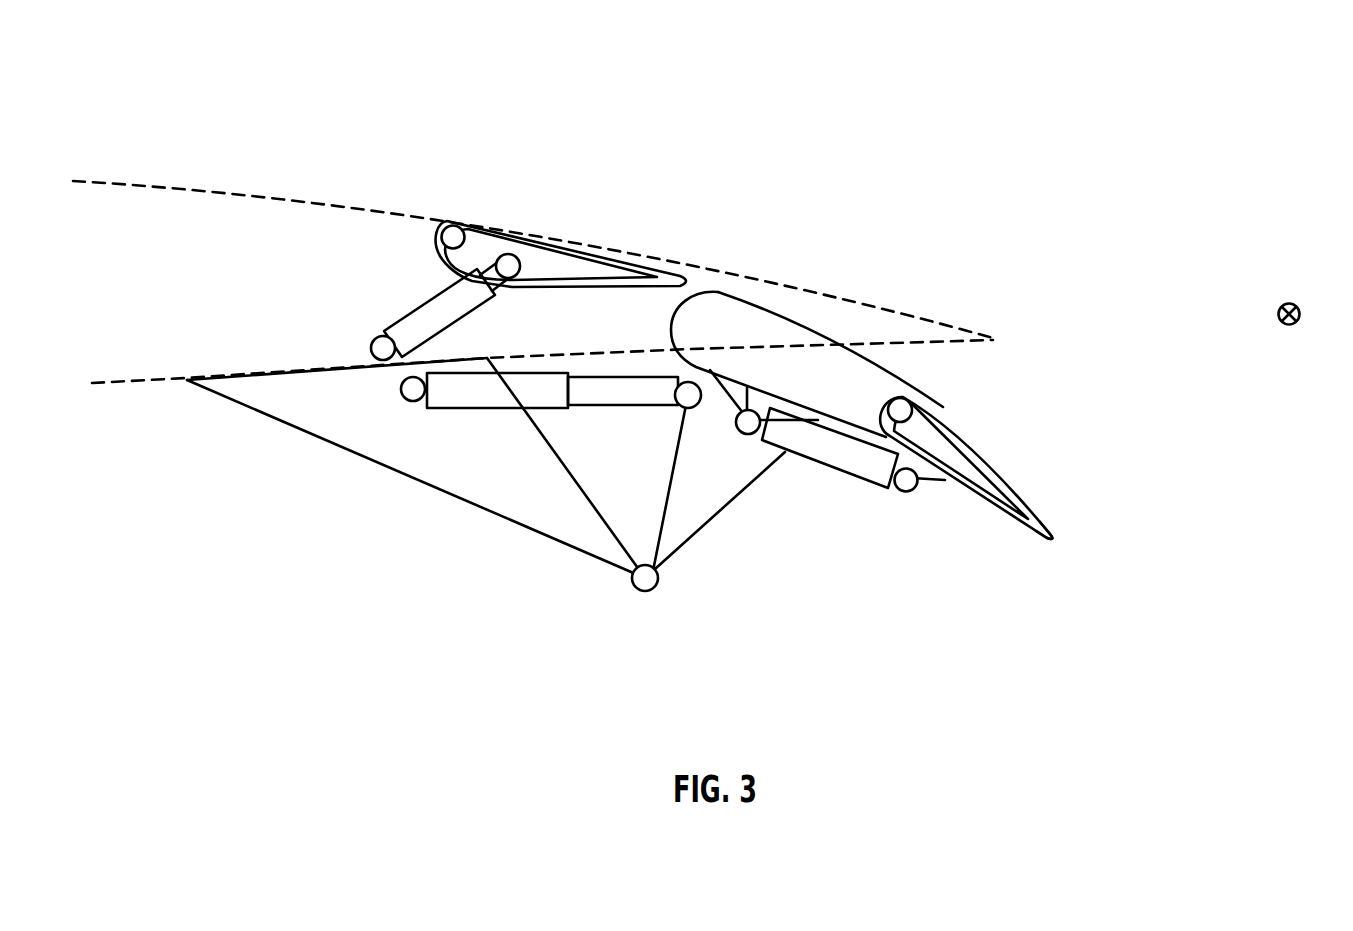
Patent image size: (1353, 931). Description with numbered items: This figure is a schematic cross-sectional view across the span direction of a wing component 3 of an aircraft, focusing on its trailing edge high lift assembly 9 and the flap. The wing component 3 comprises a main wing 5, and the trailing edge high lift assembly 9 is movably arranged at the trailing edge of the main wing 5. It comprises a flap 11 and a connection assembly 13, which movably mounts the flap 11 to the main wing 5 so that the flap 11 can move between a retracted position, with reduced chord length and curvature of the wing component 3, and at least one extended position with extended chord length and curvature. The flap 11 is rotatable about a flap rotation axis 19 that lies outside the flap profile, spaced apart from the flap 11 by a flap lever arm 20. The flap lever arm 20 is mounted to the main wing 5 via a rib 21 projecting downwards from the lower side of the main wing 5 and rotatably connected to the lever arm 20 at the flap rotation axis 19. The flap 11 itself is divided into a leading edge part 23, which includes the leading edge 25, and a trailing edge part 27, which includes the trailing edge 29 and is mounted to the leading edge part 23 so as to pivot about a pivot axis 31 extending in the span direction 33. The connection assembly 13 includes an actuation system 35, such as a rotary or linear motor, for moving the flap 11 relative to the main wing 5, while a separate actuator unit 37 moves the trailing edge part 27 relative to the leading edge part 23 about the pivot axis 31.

The wing component 3 is at (260, 98).
The main wing 5 is at (177, 321).
The trailing edge high lift assembly 9 is at (1196, 165).
The flap 11 is at (845, 372).
The connection assembly 13 is at (343, 516).
The flap rotation axis 19 is at (647, 592).
The flap lever arm 20 is at (723, 483).
The rib 21 is at (480, 480).
The leading edge part 23 is at (758, 328).
The leading edge 25 is at (680, 312).
The trailing edge part 27 is at (970, 467).
The trailing edge 29 is at (1051, 532).
The pivot axis 31 is at (905, 410).
The span direction 33 is at (1289, 303).
The actuation system 35 is at (550, 396).
The actuator unit 37 is at (845, 453).